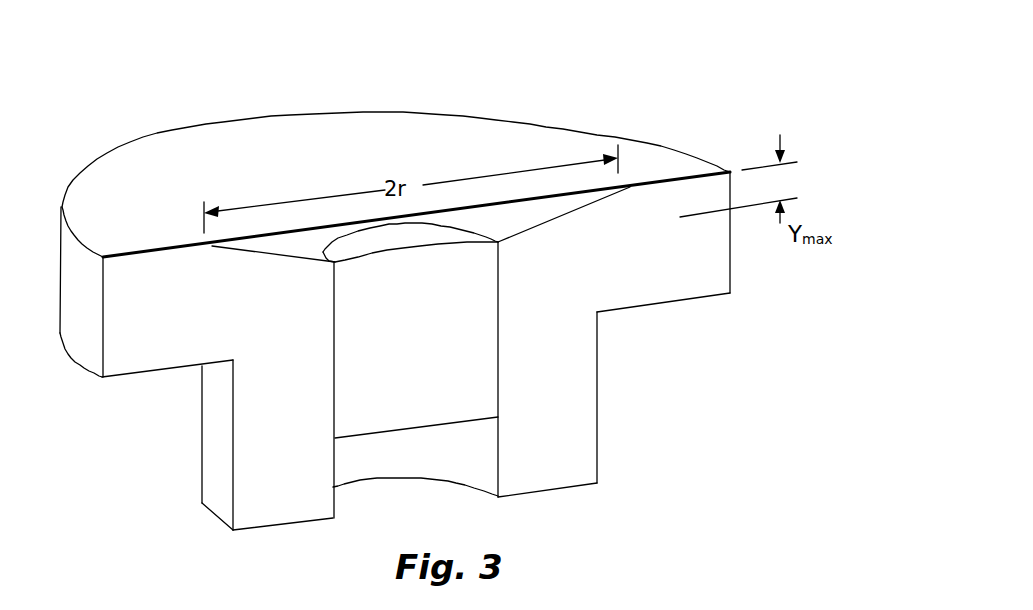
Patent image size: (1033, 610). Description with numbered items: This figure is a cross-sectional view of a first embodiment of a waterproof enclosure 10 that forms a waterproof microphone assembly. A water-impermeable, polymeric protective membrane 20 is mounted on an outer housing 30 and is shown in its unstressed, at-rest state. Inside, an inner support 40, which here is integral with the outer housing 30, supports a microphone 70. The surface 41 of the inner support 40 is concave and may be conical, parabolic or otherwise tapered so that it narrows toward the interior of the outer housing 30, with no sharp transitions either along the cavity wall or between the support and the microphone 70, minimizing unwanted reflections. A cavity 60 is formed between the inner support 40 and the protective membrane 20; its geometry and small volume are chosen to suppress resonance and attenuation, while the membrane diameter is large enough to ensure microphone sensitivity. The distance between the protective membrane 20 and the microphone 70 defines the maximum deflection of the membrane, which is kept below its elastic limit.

The waterproof enclosure 10 is at (426, 313).
The protective membrane 20 is at (426, 237).
The outer housing 30 is at (733, 282).
The inner support 40 is at (437, 386).
The surface of support member 41 is at (293, 263).
The cavity 60 is at (280, 247).
The microphone 70 is at (447, 372).